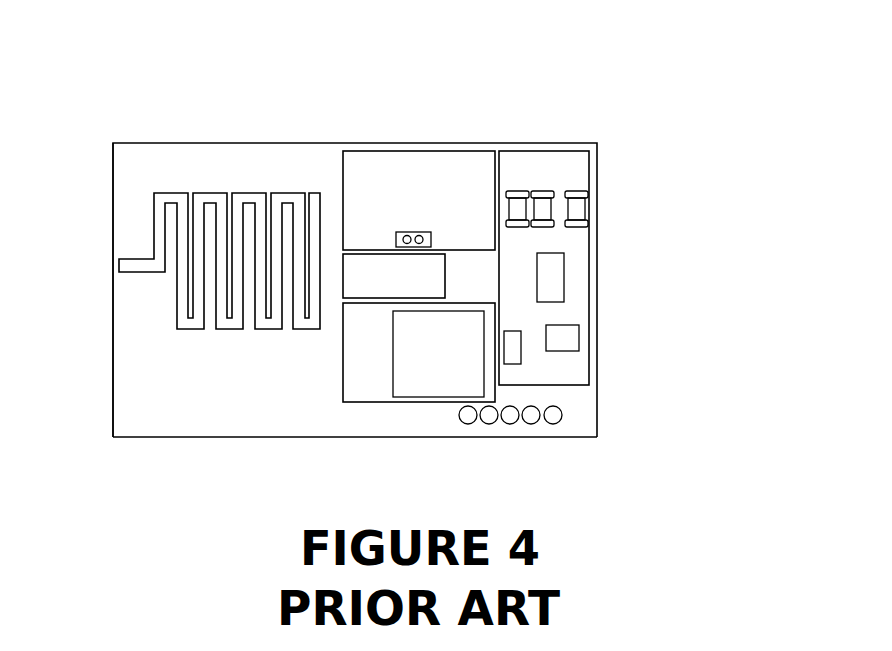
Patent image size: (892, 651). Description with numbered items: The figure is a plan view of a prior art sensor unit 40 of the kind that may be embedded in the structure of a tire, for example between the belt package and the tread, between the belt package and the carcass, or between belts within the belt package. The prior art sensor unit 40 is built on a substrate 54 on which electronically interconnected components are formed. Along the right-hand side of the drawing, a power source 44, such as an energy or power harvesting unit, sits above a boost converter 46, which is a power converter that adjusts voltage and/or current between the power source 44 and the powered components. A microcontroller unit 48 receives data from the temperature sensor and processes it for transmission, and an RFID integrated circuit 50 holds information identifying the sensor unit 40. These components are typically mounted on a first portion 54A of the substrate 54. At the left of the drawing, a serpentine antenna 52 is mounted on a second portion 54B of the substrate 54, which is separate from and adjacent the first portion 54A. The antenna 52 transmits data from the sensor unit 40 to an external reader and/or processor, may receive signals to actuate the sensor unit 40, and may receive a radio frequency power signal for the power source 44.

The prior art sensor unit 40 is at (361, 253).
The power source 44 is at (443, 160).
The boost converter 46 is at (582, 183).
The microcontroller unit 48 is at (343, 402).
The RFID integrated circuit 50 is at (344, 264).
The antenna 52 is at (165, 198).
The substrate 54 is at (313, 263).
The first portion of the substrate 54A is at (428, 419).
The second portion of the substrate 54B is at (125, 184).